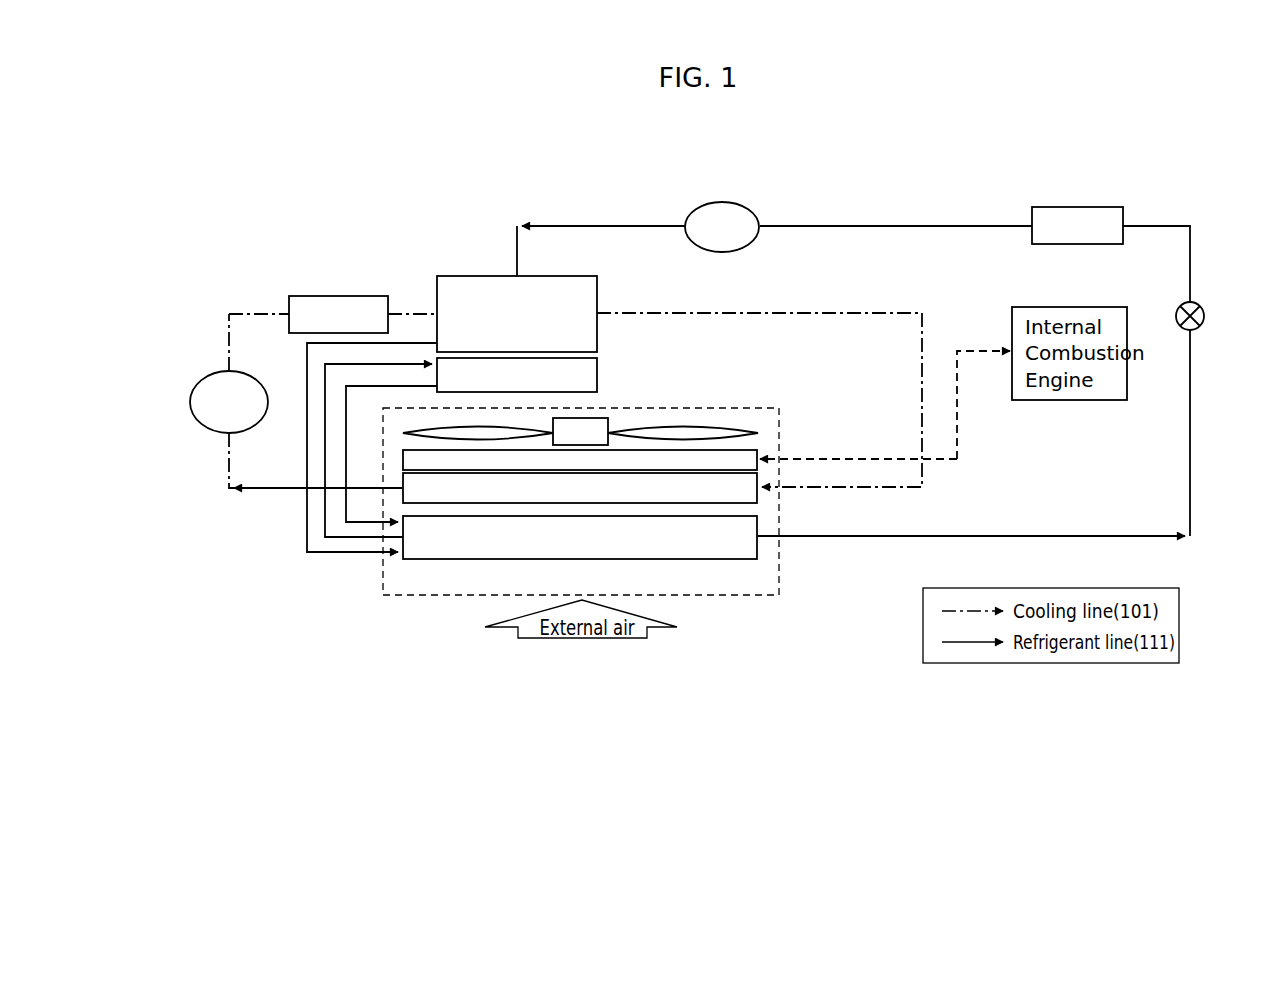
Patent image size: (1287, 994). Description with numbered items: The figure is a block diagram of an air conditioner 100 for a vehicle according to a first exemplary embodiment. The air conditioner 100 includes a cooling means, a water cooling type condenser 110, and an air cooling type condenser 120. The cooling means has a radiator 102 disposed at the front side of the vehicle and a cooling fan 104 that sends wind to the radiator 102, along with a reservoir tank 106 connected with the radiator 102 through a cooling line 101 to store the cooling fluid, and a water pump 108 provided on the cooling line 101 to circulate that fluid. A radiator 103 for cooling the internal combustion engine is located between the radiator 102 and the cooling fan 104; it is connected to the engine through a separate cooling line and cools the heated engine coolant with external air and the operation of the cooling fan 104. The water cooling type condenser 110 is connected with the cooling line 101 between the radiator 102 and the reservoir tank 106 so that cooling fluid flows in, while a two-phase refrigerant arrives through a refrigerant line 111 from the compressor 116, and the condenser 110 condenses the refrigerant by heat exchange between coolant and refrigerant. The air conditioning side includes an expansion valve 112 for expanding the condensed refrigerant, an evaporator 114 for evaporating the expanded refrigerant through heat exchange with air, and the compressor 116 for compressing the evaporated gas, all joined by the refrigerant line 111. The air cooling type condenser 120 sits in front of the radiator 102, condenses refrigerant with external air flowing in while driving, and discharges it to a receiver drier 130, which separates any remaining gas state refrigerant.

The air conditioner 100 is at (708, 134).
The cooling line 101 is at (229, 326).
The radiator 102 is at (757, 498).
The radiator for internal combustion engine 103 is at (757, 452).
The cooling fan 104 is at (682, 422).
The reservoir tank 106 is at (336, 296).
The water pump 108 is at (256, 424).
The water cooling type condenser 110 is at (466, 276).
The refrigerant line 111 is at (1027, 533).
The expansion valve 112 is at (1204, 316).
The evaporator 114 is at (1073, 207).
The compressor 116 is at (720, 202).
The air cooling type condenser 120 is at (757, 546).
The receiver drier 130 is at (597, 373).